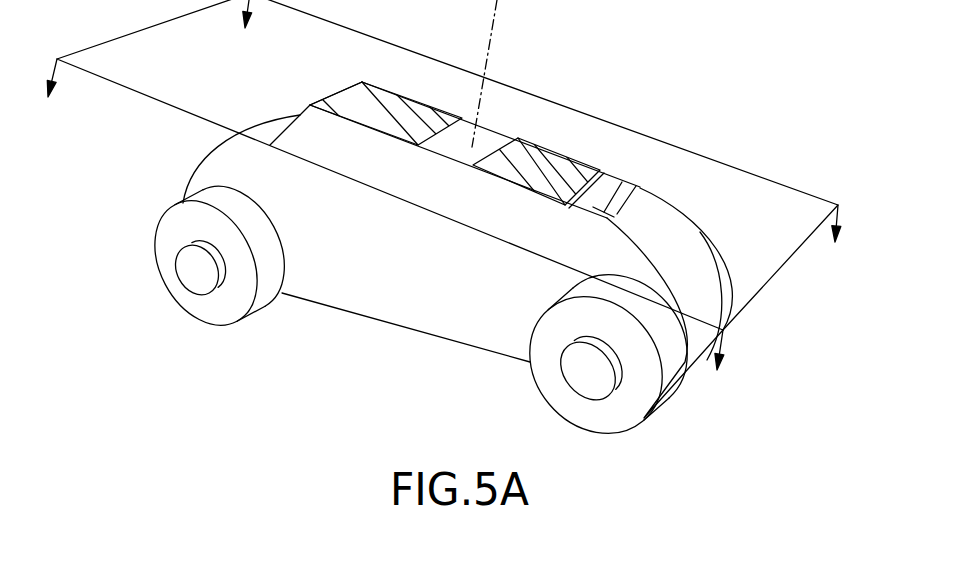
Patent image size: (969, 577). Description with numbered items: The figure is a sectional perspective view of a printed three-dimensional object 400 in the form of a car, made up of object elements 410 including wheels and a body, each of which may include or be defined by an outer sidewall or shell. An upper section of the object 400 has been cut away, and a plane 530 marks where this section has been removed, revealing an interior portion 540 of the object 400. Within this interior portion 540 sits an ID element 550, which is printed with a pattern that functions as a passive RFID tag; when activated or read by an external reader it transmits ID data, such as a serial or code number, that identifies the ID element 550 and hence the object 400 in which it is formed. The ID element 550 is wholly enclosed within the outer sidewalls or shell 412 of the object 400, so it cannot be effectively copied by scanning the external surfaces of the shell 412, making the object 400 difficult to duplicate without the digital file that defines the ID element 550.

The printed 3D object 400 is at (433, 230).
The object elements 410 is at (322, 293).
The outer sidewalls or shell 412 is at (410, 303).
The reference plane 530 is at (767, 176).
The interior portion 540 is at (578, 161).
The ID element 550 is at (507, 127).